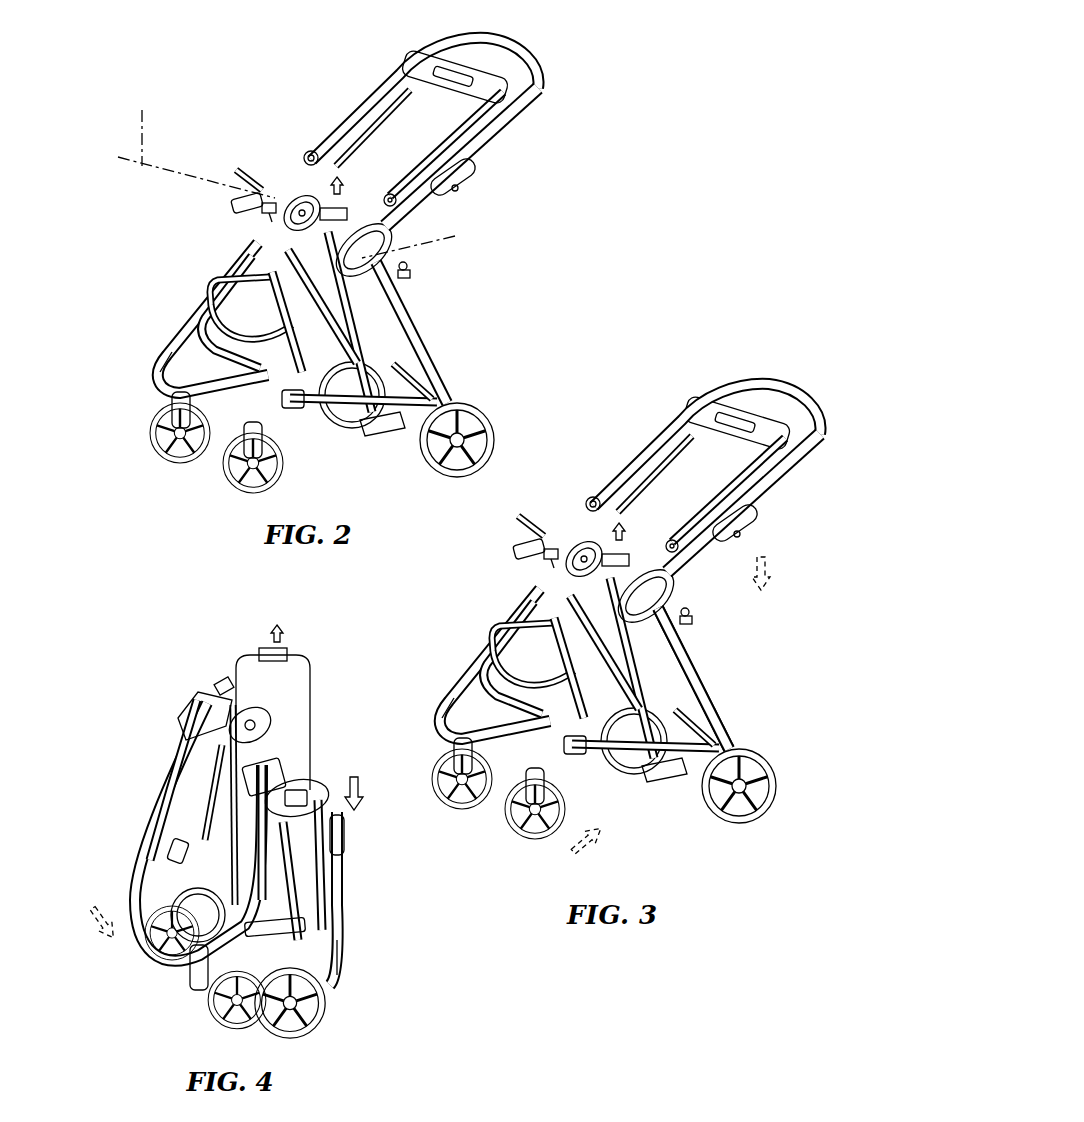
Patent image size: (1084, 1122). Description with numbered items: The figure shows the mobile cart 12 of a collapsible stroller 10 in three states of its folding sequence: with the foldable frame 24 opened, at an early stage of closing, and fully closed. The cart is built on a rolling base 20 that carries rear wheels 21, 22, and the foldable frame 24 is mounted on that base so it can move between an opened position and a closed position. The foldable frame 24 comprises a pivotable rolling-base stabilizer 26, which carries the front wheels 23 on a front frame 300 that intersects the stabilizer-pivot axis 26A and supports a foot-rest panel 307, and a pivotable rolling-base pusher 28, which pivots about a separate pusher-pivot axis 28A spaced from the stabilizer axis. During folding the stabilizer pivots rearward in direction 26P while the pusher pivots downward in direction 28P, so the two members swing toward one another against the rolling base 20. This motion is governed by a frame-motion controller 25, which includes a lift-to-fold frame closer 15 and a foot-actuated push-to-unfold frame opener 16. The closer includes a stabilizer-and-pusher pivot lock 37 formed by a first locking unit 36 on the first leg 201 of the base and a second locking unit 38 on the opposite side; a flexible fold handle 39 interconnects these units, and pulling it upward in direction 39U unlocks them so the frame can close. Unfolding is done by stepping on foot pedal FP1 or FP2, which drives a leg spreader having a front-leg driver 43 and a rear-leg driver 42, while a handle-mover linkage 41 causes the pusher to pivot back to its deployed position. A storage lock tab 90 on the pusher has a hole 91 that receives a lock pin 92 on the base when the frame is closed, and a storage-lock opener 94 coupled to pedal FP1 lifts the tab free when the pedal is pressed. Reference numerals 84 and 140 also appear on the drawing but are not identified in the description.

In FIG. 2, the collapsible stroller 10 is at (377, 256).
In FIG. 3, the collapsible stroller 10 is at (619, 615).
In FIG. 4, the collapsible stroller 10 is at (256, 818).
In FIG. 2, the mobile cart 12 is at (377, 65).
In FIG. 3, the mobile cart 12 is at (665, 420).
In FIG. 4, the mobile cart 12 is at (175, 988).
In FIG. 2, the lift-to-fold frame closer 15 is at (262, 193).
In FIG. 3, the lift-to-fold frame closer 15 is at (542, 533).
In FIG. 4, the lift-to-fold frame closer 15 is at (223, 690).
In FIG. 2, the foot-actuated push-to-unfold frame opener 16 is at (257, 252).
In FIG. 3, the foot-actuated push-to-unfold frame opener 16 is at (548, 590).
In FIG. 4, the foot-actuated push-to-unfold frame opener 16 is at (197, 790).
In FIG. 2, the rolling base 20 is at (492, 324).
In FIG. 3, the rolling base 20 is at (720, 680).
In FIG. 4, the rolling base 20 is at (303, 943).
In FIG. 2, the rear wheel 21 is at (427, 473).
In FIG. 3, the rear wheel 21 is at (720, 828).
In FIG. 4, the rear wheel 21 is at (273, 1040).
In FIG. 2, the rear wheel 22 is at (336, 440).
In FIG. 3, the rear wheel 22 is at (633, 788).
In FIG. 4, the rear wheel 22 is at (173, 883).
In FIG. 2, the front wheel 23 is at (148, 447).
In FIG. 3, the front wheel 23 is at (433, 800).
In FIG. 4, the front wheel 23 is at (153, 962).
In FIG. 2, the foldable frame 24 is at (503, 100).
In FIG. 2, the frame-motion controller 25 is at (230, 163).
In FIG. 3, the frame-motion controller 25 is at (542, 503).
In FIG. 4, the frame-motion controller 25 is at (227, 680).
In FIG. 2, the rolling-base stabilizer 26 is at (117, 240).
In FIG. 3, the rolling-base stabilizer 26 is at (455, 650).
In FIG. 4, the rolling-base stabilizer 26 is at (150, 815).
In FIG. 2, the stabilizer-pivot axis 26A is at (110, 48).
In FIG. 3, the stabilizer pivot direction 26P is at (583, 857).
In FIG. 4, the stabilizer pivot direction 26P is at (94, 936).
In FIG. 2, the rolling-base pusher 28 is at (577, 186).
In FIG. 3, the rolling-base pusher 28 is at (770, 483).
In FIG. 4, the rolling-base pusher 28 is at (357, 948).
In FIG. 2, the pusher-pivot axis 28A is at (457, 244).
In FIG. 3, the pusher pivot direction 28P is at (772, 573).
In FIG. 4, the pusher pivot direction 28P is at (365, 790).
In FIG. 2, the first locking unit 36 is at (280, 193).
In FIG. 3, the first locking unit 36 is at (672, 595).
In FIG. 4, the first locking unit 36 is at (327, 780).
In FIG. 4, the stabilizer-and-pusher pivot lock 37 is at (300, 707).
In FIG. 2, the second locking unit 38 is at (403, 242).
In FIG. 3, the second locking unit 38 is at (568, 540).
In FIG. 4, the second locking unit 38 is at (263, 728).
In FIG. 2, the fold handle 39 is at (320, 205).
In FIG. 3, the fold handle 39 is at (623, 527).
In FIG. 4, the fold handle 39 is at (265, 637).
In FIG. 2, the upward pull direction 39U is at (345, 184).
In FIG. 3, the upward pull direction 39U is at (648, 512).
In FIG. 4, the upward pull direction 39U is at (285, 633).
In FIG. 2, the handle-mover linkage 41 is at (405, 270).
In FIG. 2, the rear-leg driver 42 is at (304, 282).
In FIG. 2, the front-leg driver 43 is at (238, 290).
In FIG. 3, the brake link 84 is at (690, 723).
In FIG. 2, the storage lock tab 90 is at (475, 180).
In FIG. 3, the storage lock tab 90 is at (760, 527).
In FIG. 4, the storage lock tab 90 is at (347, 837).
In FIG. 2, the hole 91 is at (440, 192).
In FIG. 3, the hole 91 is at (727, 542).
In FIG. 2, the lock pin 92 is at (433, 353).
In FIG. 3, the lock pin 92 is at (710, 700).
In FIG. 2, the storage-lock opener 94 is at (410, 375).
In FIG. 3, the seat 140 is at (553, 620).
In FIG. 3, the first leg 201 is at (683, 645).
In FIG. 4, the first leg 201 is at (337, 950).
In FIG. 2, the front frame 300 is at (152, 362).
In FIG. 2, the foot-rest panel 307 is at (182, 375).
In FIG. 2, the first foot pedal FP1 is at (367, 447).
In FIG. 3, the first foot pedal FP1 is at (683, 772).
In FIG. 4, the first foot pedal FP1 is at (300, 927).
In FIG. 2, the second foot pedal FP2 is at (293, 403).
In FIG. 3, the second foot pedal FP2 is at (572, 748).
In FIG. 4, the second foot pedal FP2 is at (177, 847).